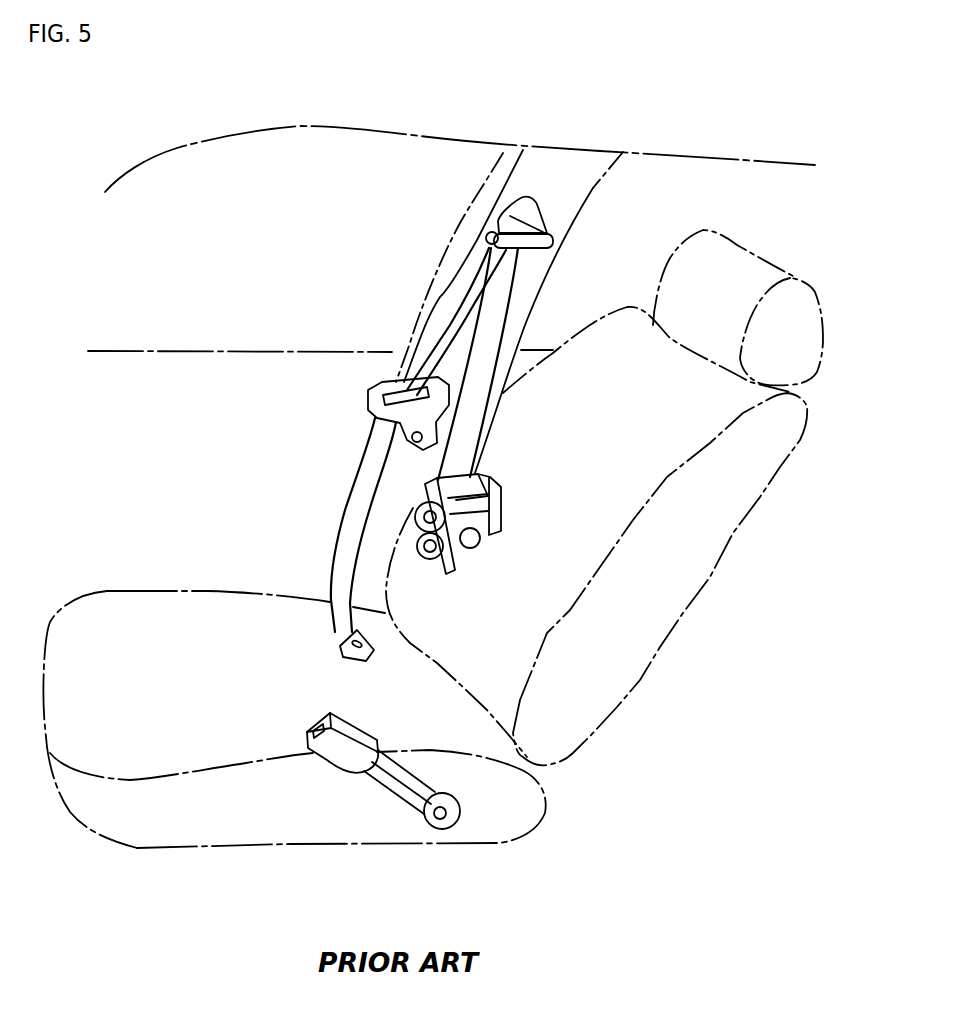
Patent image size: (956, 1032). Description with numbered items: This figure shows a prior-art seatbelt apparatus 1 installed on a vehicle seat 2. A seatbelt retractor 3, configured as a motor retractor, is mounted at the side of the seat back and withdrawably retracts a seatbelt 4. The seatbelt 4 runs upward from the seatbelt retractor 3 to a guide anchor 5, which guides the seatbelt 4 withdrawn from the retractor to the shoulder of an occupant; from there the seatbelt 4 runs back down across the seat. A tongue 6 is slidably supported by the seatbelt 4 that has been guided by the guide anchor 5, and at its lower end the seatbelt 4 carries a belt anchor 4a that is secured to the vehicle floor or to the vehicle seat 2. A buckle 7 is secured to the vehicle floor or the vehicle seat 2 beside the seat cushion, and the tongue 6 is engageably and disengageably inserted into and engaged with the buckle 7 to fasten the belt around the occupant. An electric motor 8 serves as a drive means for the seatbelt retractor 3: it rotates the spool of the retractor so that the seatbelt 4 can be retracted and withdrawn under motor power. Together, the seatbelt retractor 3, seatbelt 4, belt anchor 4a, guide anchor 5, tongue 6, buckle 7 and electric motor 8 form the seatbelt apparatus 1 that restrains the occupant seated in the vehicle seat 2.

The seatbelt apparatus 1 is at (522, 611).
The vehicle seat 2 is at (188, 831).
The seatbelt retractor 3 is at (500, 503).
The seatbelt 4 is at (470, 302).
The belt anchor 4a is at (359, 658).
The guide anchor 5 is at (528, 224).
The tongue 6 is at (374, 411).
The buckle 7 is at (325, 746).
The electric motor 8 is at (470, 542).